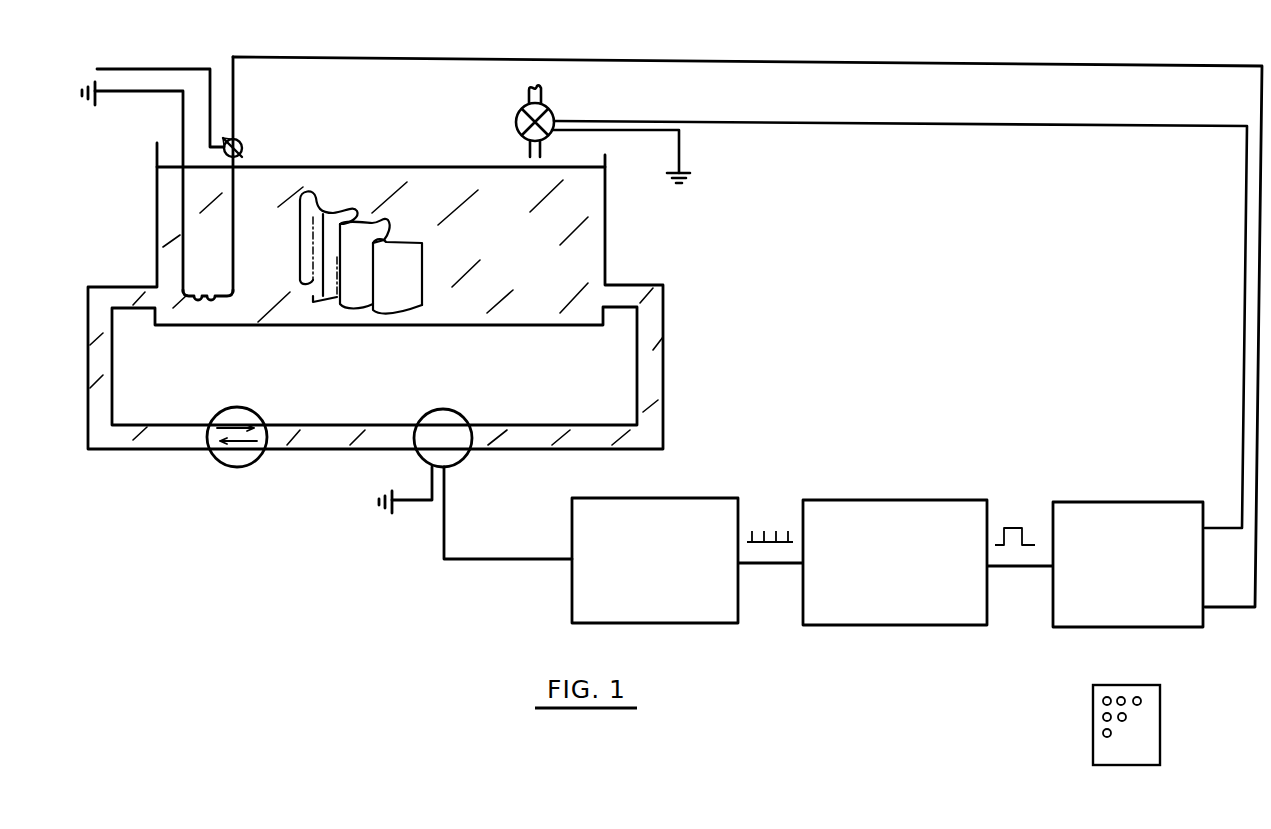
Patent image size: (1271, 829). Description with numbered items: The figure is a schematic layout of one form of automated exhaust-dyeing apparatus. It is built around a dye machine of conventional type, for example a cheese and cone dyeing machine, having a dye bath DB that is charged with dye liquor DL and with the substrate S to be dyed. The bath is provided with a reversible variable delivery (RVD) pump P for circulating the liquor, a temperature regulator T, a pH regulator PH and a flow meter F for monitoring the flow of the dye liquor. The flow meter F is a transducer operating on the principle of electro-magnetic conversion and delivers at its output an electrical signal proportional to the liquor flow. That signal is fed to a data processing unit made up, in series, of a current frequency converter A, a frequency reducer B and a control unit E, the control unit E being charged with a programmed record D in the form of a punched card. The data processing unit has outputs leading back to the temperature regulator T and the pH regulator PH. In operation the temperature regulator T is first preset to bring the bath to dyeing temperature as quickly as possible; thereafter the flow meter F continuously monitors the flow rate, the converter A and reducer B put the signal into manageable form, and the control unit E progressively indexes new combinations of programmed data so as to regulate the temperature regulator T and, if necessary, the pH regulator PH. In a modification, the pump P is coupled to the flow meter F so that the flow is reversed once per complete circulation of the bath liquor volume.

The temperature regulator T is at (242, 149).
The pH regulator PH is at (550, 106).
The dye liquor DL is at (376, 312).
The dye bath DB is at (608, 258).
The substrate S is at (361, 252).
The reversible variable delivery pump P is at (237, 444).
The reversible variable delivery RVD is at (237, 449).
The flow meter F is at (475, 484).
The current frequency converter A is at (687, 560).
The frequency reducer B is at (928, 562).
The control unit E is at (1128, 564).
The programmed record D is at (1126, 725).